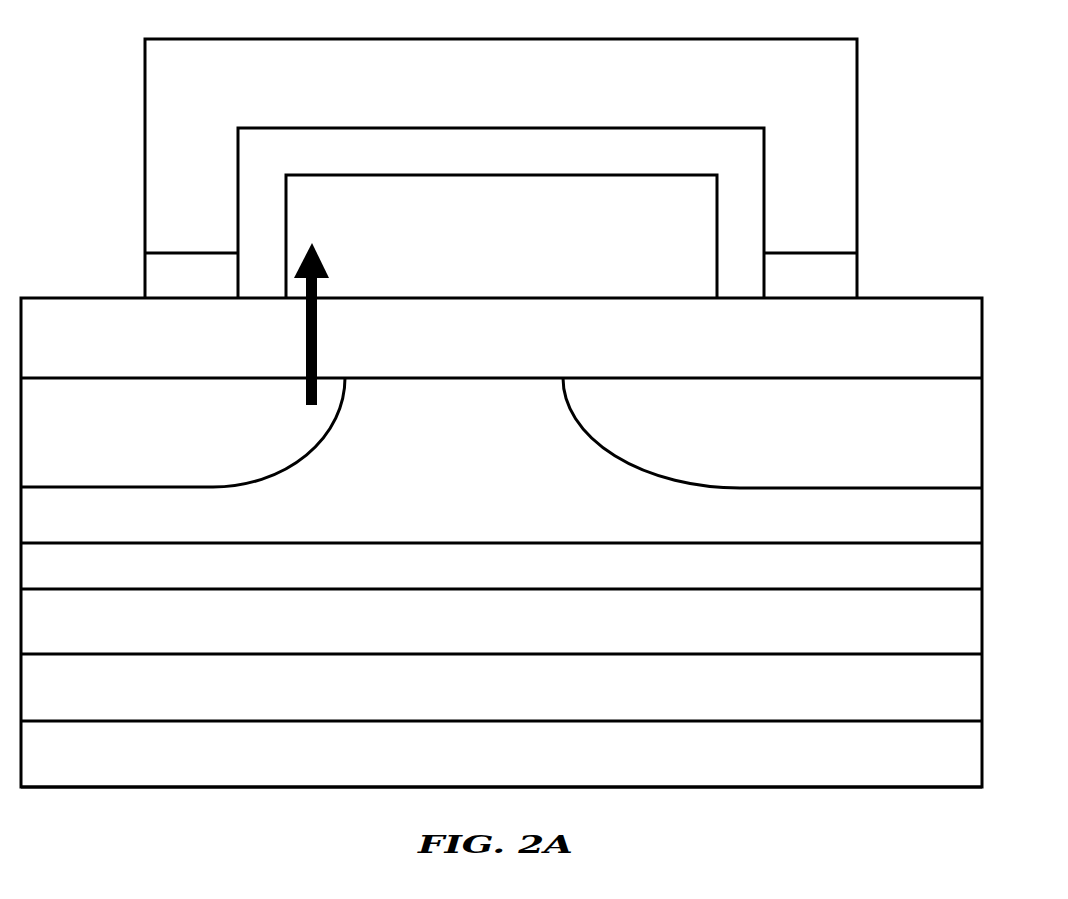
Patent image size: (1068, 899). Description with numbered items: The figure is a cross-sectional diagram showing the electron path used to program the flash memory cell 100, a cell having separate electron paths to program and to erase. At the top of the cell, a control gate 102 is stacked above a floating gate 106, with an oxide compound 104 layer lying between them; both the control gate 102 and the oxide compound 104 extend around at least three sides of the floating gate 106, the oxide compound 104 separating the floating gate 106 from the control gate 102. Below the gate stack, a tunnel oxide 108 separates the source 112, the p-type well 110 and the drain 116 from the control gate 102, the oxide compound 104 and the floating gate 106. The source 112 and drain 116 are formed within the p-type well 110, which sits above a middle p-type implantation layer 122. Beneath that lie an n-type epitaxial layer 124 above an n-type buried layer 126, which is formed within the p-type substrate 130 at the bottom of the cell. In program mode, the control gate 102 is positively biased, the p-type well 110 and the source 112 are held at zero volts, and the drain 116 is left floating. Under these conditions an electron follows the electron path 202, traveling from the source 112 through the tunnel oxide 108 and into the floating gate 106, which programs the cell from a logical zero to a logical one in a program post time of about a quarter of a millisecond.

The flash memory cell 100 is at (985, 93).
The control gate 102 is at (623, 98).
The oxide compound 104 is at (653, 164).
The floating gate 106 is at (630, 251).
The tunnel oxide 108 is at (630, 350).
The p-type well 110 is at (557, 497).
The source 112 is at (210, 439).
The drain 116 is at (875, 437).
The middle p-type implantation layer 122 is at (683, 579).
The n-type epitaxial layer 124 is at (683, 635).
The n-type buried layer 126 is at (683, 700).
The p-type substrate 130 is at (683, 768).
The electron path 202 is at (306, 290).